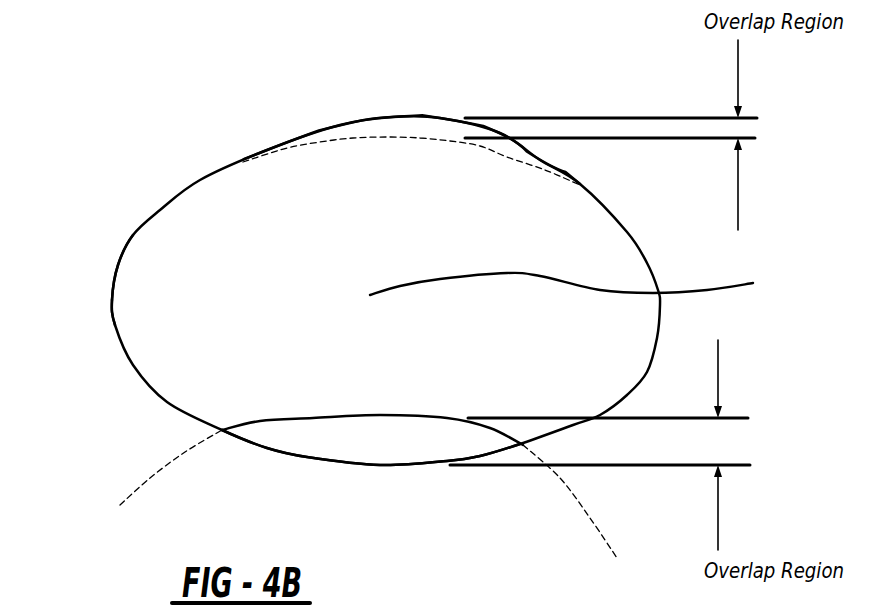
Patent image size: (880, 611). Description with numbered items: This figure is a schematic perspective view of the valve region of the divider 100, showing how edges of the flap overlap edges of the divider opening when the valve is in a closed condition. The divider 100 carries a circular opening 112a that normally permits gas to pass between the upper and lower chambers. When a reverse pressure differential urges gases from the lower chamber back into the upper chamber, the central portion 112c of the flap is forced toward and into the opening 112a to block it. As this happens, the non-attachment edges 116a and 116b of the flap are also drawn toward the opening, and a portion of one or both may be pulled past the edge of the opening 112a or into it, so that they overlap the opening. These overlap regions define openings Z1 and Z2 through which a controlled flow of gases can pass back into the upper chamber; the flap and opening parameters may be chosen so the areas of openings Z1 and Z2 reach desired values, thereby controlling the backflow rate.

The divider 100 is at (92, 395).
The circular opening 112a is at (110, 283).
The central portion of the flap 112c is at (584, 282).
The non-attachment edge 116a is at (405, 118).
The non-attachment edge 116b is at (332, 418).
The opening Z1 is at (377, 442).
The opening Z2 is at (347, 132).